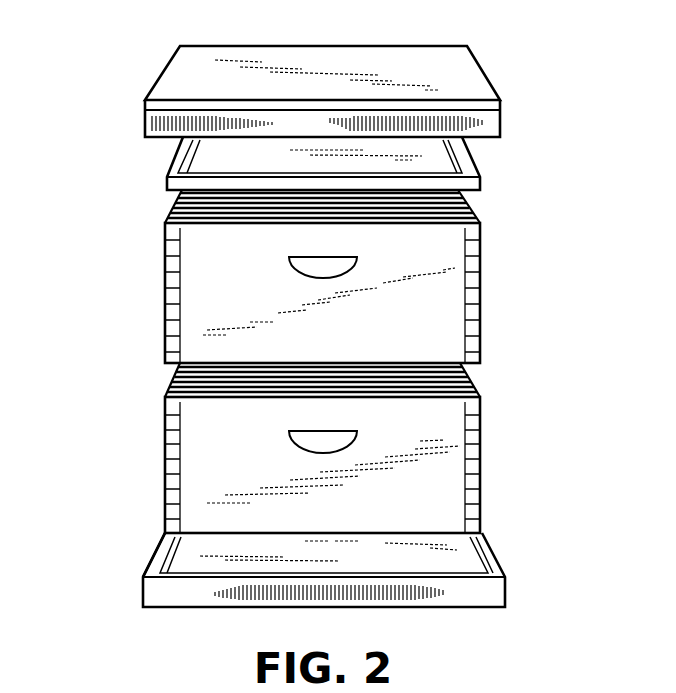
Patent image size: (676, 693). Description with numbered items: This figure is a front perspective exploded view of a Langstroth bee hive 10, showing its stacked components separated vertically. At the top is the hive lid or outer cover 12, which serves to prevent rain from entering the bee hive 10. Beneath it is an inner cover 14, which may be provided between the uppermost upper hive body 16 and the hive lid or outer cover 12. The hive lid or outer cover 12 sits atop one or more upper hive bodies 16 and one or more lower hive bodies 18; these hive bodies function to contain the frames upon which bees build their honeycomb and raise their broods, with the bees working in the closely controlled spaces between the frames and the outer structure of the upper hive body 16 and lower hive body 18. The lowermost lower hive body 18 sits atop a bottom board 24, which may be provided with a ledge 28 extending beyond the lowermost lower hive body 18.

The Langstroth bee hive 10 is at (118, 73).
The hive lid or outer cover 12 is at (460, 68).
The inner cover 14 is at (475, 167).
The upper hive body 16 is at (472, 291).
The lower hive body 18 is at (167, 467).
The bottom board 24 is at (472, 570).
The ledge 28 is at (153, 556).